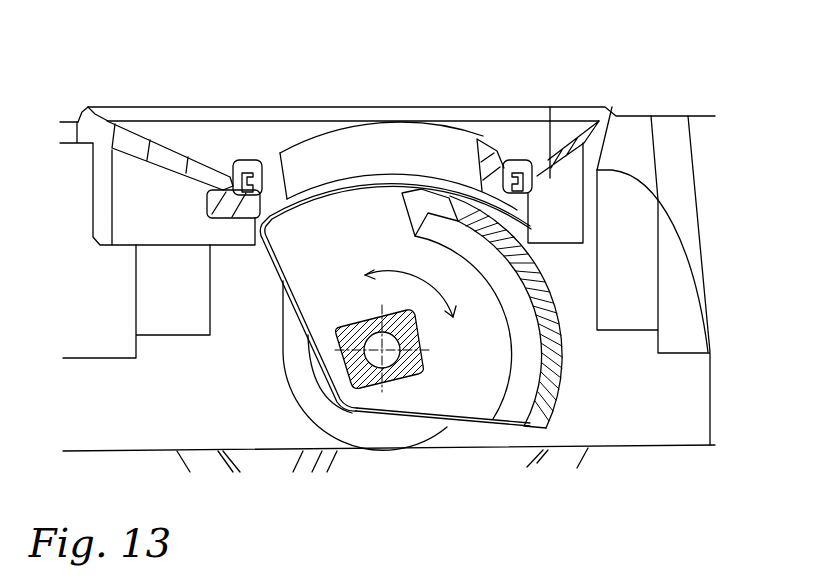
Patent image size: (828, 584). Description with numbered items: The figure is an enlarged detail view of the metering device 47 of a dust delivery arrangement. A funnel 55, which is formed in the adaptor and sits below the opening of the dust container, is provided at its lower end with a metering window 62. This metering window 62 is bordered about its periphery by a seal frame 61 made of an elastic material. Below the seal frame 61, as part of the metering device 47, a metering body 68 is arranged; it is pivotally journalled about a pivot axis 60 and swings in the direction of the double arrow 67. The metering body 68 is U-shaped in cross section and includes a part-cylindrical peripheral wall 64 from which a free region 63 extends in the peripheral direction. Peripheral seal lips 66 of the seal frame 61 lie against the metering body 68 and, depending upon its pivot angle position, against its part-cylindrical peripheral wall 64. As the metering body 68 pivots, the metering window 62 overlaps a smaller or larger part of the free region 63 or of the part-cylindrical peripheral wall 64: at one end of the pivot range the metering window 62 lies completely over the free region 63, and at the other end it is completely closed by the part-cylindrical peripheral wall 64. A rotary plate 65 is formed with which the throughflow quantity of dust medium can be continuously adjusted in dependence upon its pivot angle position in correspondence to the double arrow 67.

The metering device 47 is at (460, 428).
The funnel 55 is at (162, 152).
The pivot axis 60 is at (381, 351).
The seal frame 61 is at (257, 160).
The metering window 62 is at (375, 159).
The free region 63 is at (347, 192).
The part-cylindrical peripheral wall 64 is at (550, 312).
The rotary plate 65 is at (307, 386).
The peripheral seal lips 66 is at (268, 222).
The double arrow 67 is at (512, 350).
The metering body 68 is at (488, 377).